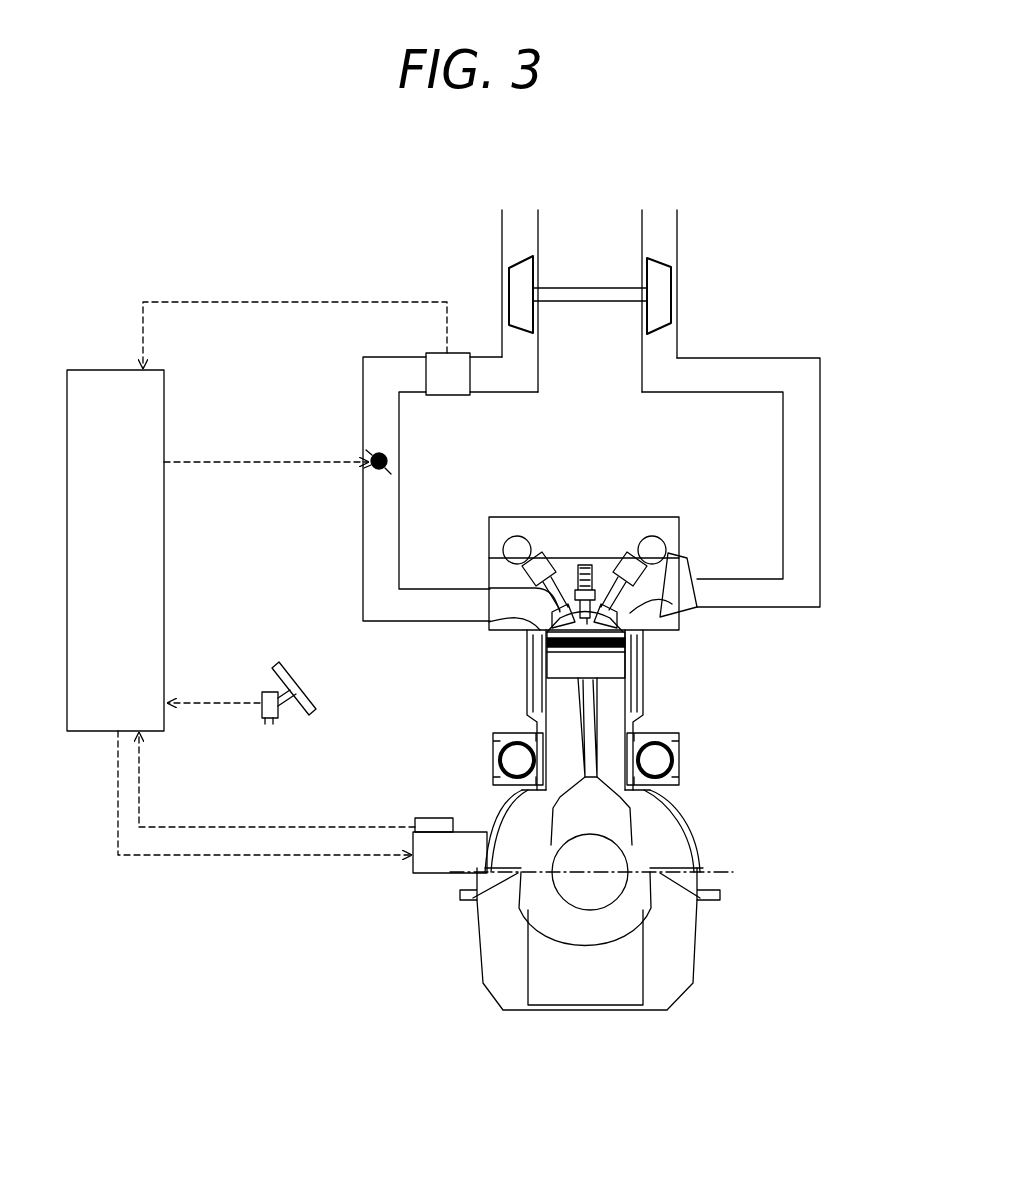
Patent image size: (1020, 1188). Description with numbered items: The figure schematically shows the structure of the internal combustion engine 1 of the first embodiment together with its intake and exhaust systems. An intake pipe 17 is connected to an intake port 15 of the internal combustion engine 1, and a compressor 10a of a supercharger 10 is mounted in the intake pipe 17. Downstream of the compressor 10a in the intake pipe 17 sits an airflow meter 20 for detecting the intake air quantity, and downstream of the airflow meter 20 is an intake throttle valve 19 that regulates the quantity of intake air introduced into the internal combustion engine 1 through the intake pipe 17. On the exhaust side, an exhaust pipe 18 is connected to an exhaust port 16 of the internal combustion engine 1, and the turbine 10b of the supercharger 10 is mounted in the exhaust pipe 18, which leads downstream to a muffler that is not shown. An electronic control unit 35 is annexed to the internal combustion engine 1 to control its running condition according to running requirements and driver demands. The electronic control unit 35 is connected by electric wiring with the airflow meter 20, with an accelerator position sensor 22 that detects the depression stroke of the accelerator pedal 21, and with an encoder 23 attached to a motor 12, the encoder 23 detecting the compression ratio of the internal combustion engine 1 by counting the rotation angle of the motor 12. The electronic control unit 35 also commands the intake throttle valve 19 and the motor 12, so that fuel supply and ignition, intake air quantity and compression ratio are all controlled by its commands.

The internal combustion engine 1 is at (714, 802).
The supercharger 10 is at (567, 278).
The compressor 10a is at (523, 258).
The turbine 10b is at (660, 263).
The motor 12 is at (420, 873).
The intake port 15 is at (513, 608).
The exhaust port 16 is at (672, 609).
The intake pipe 17 is at (363, 533).
The exhaust pipe 18 is at (820, 550).
The intake throttle valve 19 is at (374, 455).
The airflow meter 20 is at (440, 395).
The accelerator pedal 21 is at (293, 680).
The accelerator position sensor 22 is at (260, 715).
The encoder 23 is at (435, 818).
The electronic control unit 35 is at (97, 370).